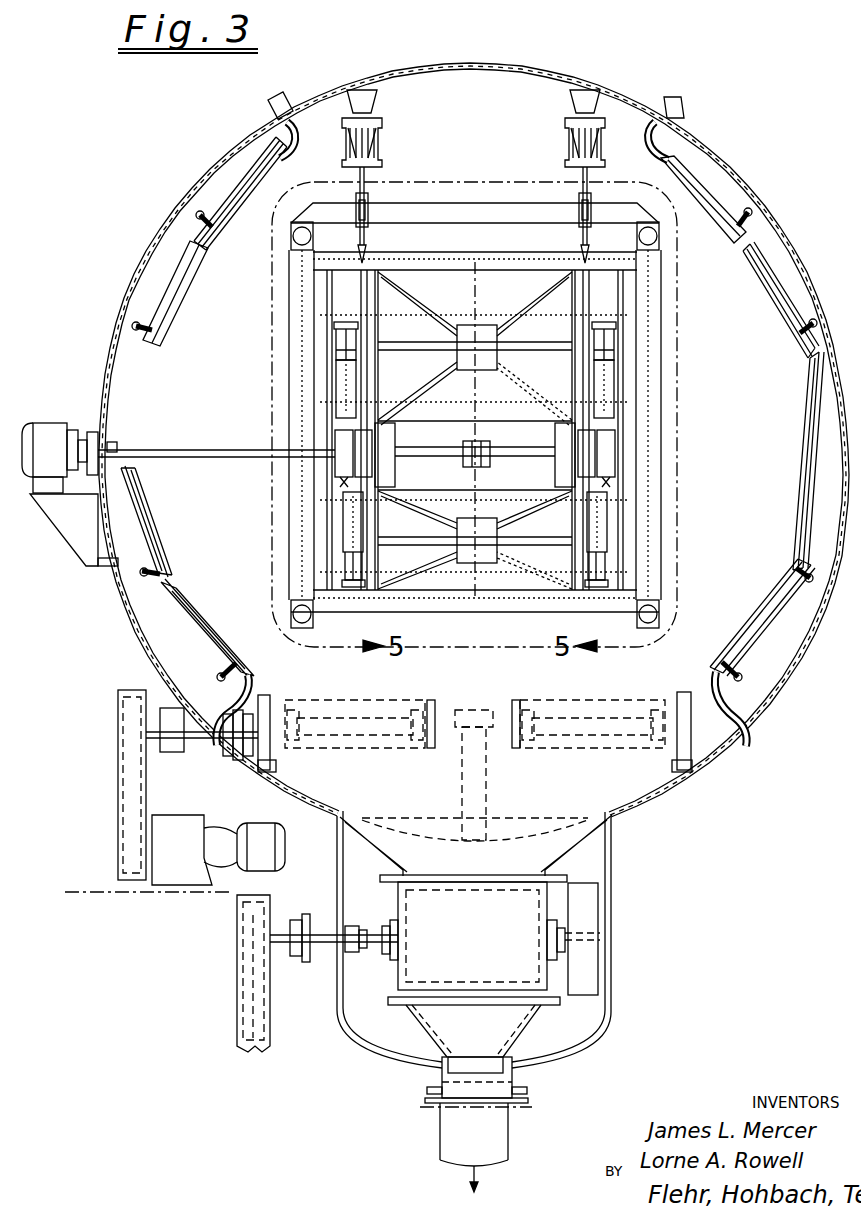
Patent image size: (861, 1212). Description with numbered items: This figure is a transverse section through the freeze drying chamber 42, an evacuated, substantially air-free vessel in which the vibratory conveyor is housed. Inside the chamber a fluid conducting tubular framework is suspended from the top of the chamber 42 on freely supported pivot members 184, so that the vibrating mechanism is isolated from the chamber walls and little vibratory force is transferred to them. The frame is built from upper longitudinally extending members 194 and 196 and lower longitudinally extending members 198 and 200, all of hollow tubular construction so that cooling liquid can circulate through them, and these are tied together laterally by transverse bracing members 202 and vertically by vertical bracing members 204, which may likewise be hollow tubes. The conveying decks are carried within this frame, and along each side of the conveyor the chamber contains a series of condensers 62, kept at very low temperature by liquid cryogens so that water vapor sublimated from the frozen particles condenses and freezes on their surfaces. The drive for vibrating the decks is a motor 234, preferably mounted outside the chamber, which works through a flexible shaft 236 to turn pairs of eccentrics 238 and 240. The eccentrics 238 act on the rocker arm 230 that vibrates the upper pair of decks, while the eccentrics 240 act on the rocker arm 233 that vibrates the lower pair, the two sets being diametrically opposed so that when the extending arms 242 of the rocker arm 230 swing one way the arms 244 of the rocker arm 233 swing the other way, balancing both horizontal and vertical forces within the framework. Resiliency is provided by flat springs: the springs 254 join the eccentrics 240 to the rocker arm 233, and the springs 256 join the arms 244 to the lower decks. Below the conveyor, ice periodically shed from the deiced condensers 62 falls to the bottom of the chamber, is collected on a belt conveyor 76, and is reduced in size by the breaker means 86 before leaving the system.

The freeze drying chamber 42 is at (640, 109).
The condensers 62 is at (142, 378).
The belt conveyor 76 is at (356, 705).
The breaker means 86 is at (386, 980).
The pivot members 184 is at (370, 194).
The upper longitudinally extending member 194 is at (298, 222).
The upper longitudinally extending member 196 is at (638, 236).
The lower longitudinally extending member 198 is at (312, 619).
The lower longitudinally extending member 200 is at (637, 617).
The transverse bracing members 202 is at (497, 252).
The vertical bracing members 204 is at (658, 382).
The rocker arm 230 is at (353, 362).
The rocker arm 233 is at (353, 553).
The motor 234 is at (48, 432).
The flexible shaft 236 is at (206, 450).
The eccentrics 238 is at (368, 434).
The eccentrics 240 is at (343, 460).
The extending arms 242 is at (614, 347).
The arms 244 is at (600, 567).
The flat springs 254 is at (368, 526).
The flat springs 256 is at (355, 398).